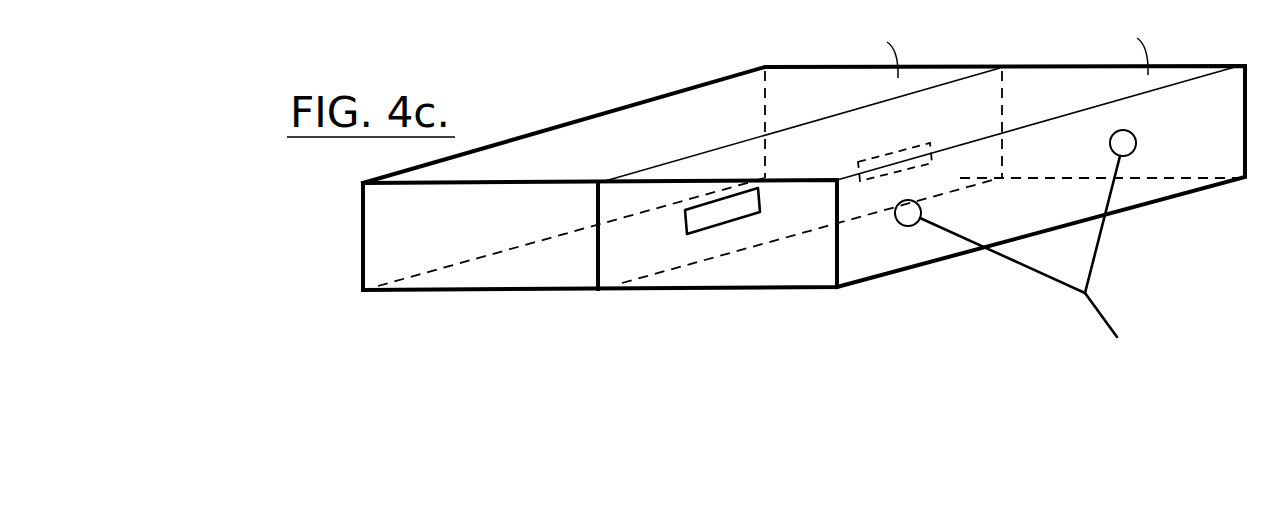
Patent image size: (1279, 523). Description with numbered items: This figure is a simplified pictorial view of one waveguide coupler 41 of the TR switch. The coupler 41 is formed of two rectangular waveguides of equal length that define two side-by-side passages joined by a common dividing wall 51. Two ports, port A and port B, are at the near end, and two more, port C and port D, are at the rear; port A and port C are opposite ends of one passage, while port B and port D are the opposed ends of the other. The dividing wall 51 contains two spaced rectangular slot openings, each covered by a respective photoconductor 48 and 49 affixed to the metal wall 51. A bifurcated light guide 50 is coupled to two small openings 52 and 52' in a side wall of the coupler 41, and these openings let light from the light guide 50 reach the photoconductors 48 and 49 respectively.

The waveguide coupler 41 is at (605, 112).
The photoconductor 48 is at (727, 225).
The photoconductor 49 is at (895, 171).
The light guide 50 is at (1102, 312).
The common wall 51 is at (965, 93).
The side-wall opening 52 is at (910, 231).
The side-wall opening 52' is at (1137, 130).